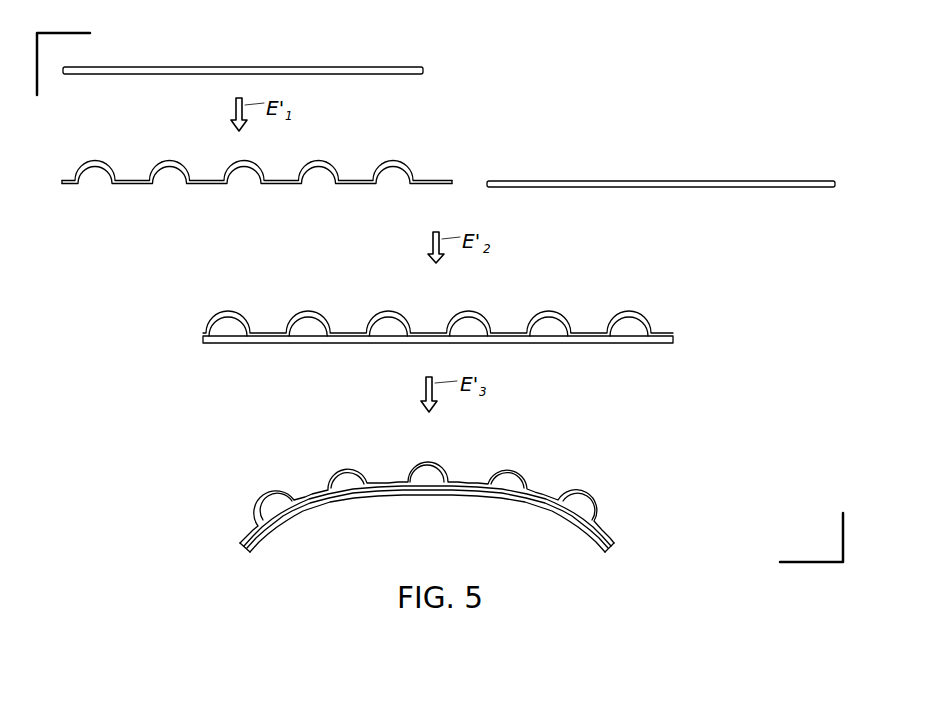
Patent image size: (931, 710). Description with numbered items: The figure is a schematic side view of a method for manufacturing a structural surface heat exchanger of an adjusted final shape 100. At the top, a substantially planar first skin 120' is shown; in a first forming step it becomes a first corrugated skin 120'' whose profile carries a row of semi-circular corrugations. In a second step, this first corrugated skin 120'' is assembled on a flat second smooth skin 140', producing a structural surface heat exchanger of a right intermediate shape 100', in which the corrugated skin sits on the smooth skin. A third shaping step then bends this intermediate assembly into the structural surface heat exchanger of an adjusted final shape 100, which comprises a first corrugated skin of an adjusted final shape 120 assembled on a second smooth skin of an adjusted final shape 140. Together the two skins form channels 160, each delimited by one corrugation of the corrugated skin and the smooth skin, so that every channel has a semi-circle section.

The substantially planar first skin 120' is at (243, 56).
The first corrugated skin 120'' is at (335, 225).
The second smooth skin 140' is at (661, 265).
The structural surface heat exchanger of a right intermediate shape 100' is at (478, 306).
The structural surface heat exchanger of an adjusted final shape 100 is at (474, 483).
The first corrugated skin of an adjusted final shape 120 is at (458, 502).
The second smooth skin of an adjusted final shape 140 is at (427, 519).
The channels 160 is at (323, 486).